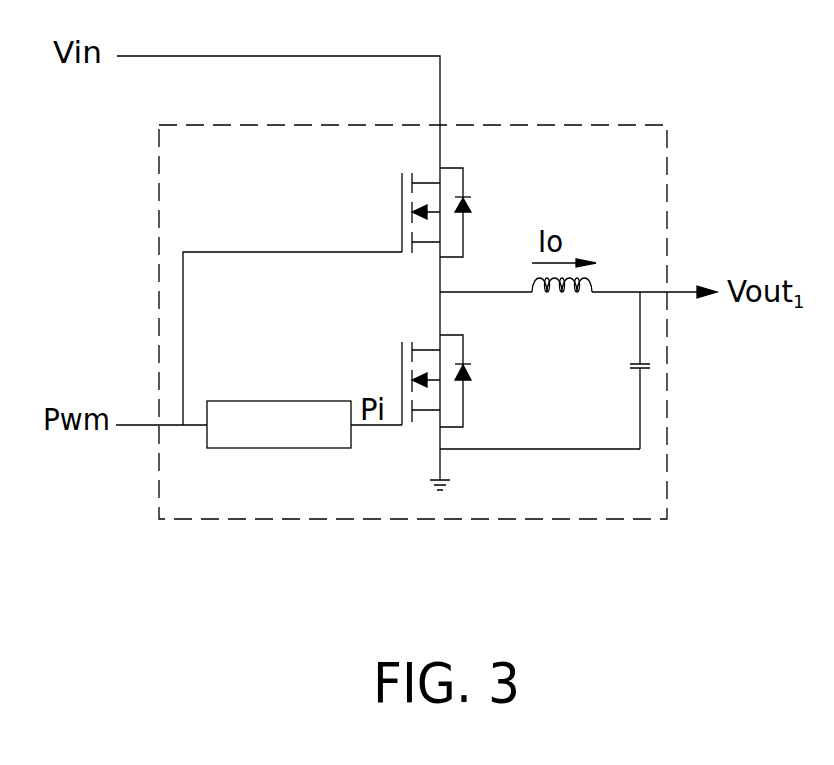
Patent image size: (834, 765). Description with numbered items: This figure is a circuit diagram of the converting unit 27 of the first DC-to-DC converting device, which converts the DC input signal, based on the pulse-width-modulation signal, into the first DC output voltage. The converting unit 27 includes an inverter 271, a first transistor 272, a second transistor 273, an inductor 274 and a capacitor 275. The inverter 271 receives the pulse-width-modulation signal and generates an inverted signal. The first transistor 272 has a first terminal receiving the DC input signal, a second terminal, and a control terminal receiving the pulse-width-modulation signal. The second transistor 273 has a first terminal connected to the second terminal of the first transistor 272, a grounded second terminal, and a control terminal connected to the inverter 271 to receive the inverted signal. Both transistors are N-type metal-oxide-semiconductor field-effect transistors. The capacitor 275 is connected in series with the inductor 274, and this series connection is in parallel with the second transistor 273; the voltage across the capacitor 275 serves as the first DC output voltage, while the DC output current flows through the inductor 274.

The converting unit 27 is at (602, 122).
The inverter 271 is at (328, 400).
The first transistor 272 is at (428, 182).
The second transistor 273 is at (427, 350).
The inductor 274 is at (562, 297).
The capacitor 275 is at (635, 372).